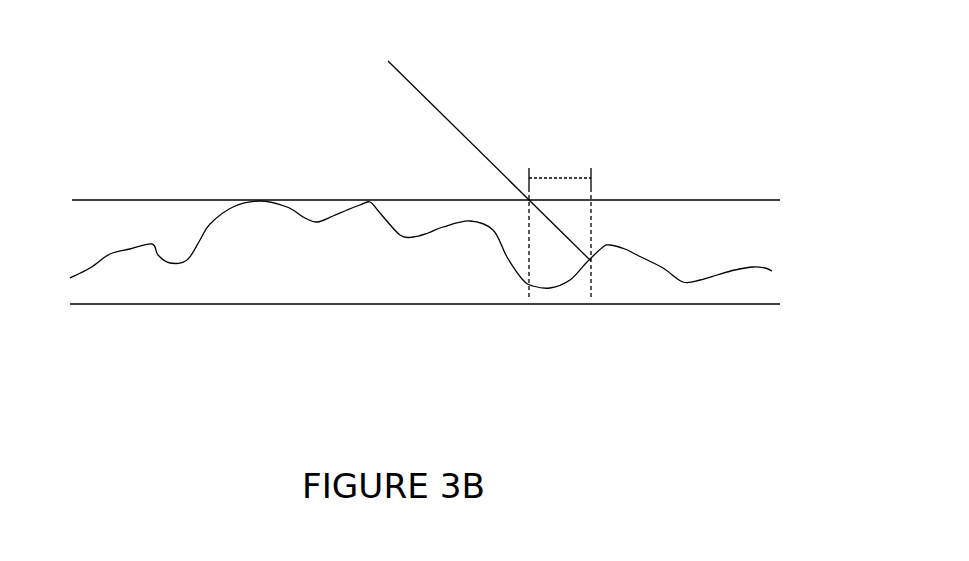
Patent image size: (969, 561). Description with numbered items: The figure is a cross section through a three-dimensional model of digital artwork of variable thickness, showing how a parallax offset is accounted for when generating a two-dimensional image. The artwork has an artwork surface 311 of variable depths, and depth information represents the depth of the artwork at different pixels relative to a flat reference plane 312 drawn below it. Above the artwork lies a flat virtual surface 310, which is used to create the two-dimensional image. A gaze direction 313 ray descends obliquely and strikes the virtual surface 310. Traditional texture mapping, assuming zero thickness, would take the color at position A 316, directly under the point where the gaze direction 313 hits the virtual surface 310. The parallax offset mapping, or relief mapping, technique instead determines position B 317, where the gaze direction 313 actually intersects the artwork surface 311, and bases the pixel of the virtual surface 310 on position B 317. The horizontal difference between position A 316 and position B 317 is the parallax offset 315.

The virtual surface 310 is at (112, 200).
The artwork surface 311 is at (667, 273).
The reference plane 312 is at (130, 305).
The gaze direction 313 is at (428, 96).
The parallax offset 315 is at (558, 176).
The position A 316 is at (527, 284).
The position B 317 is at (592, 263).